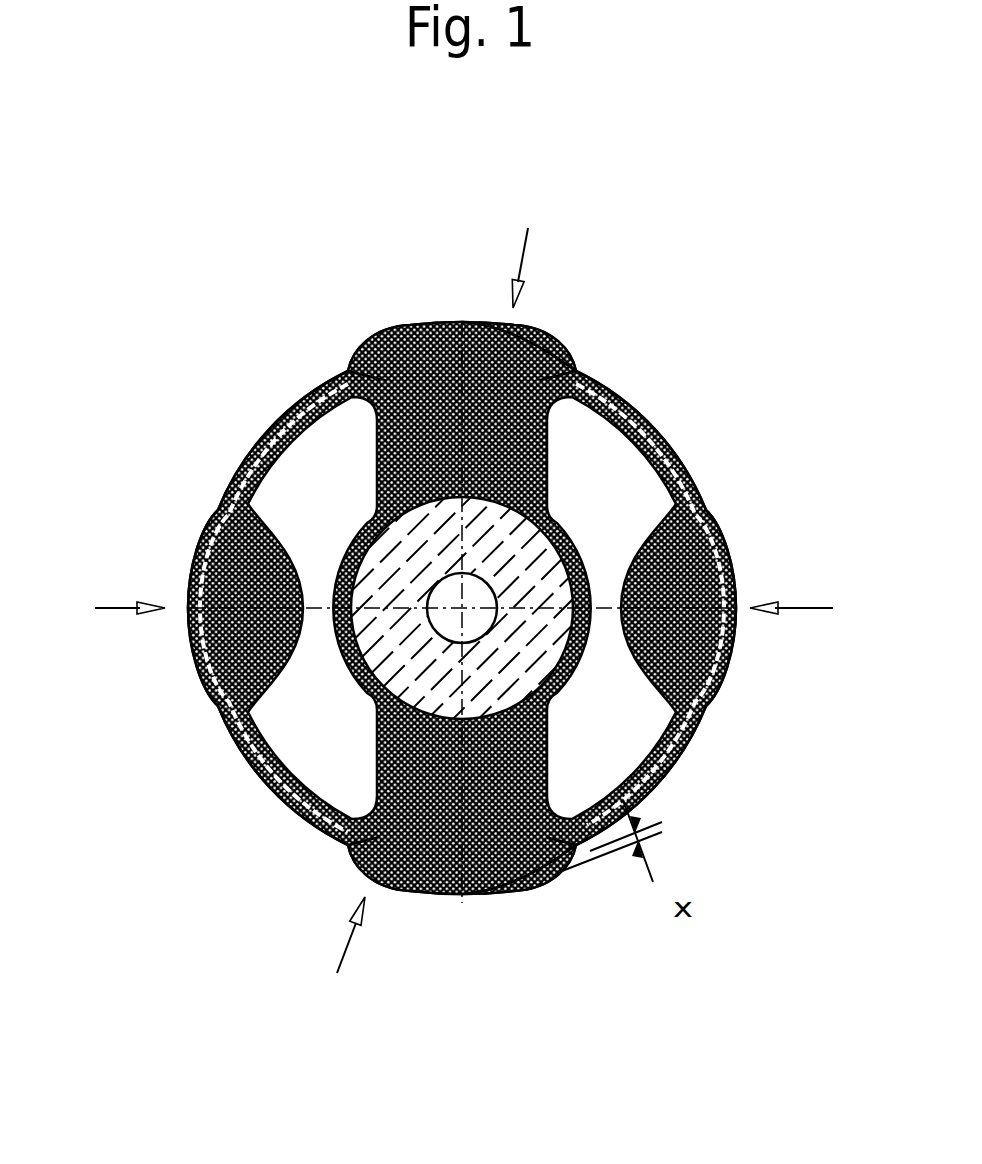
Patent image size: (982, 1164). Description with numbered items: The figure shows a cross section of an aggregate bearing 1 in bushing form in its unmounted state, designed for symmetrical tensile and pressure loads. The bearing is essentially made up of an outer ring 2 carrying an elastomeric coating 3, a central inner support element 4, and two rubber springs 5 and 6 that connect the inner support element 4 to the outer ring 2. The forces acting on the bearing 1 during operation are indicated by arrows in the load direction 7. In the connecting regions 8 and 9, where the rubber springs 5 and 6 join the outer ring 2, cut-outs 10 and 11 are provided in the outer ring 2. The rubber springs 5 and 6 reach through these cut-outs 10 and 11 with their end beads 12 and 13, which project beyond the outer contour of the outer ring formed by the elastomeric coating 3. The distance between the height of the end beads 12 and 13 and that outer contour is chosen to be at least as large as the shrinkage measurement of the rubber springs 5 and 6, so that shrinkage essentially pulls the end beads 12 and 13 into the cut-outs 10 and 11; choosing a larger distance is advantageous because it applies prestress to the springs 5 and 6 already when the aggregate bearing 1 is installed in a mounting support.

The aggregate bearing 1 is at (228, 768).
The outer ring 2 is at (680, 445).
The elastomeric coating 3 is at (247, 448).
The inner support element 4 is at (532, 662).
The rubber spring 5 is at (505, 435).
The rubber spring 6 is at (378, 750).
The load direction 7 is at (463, 601).
The connecting region 8 is at (533, 238).
The connecting region 9 is at (336, 960).
The cut-out 10 is at (557, 348).
The cut-out 11 is at (520, 887).
The end bead 12 is at (398, 342).
The end bead 13 is at (428, 888).